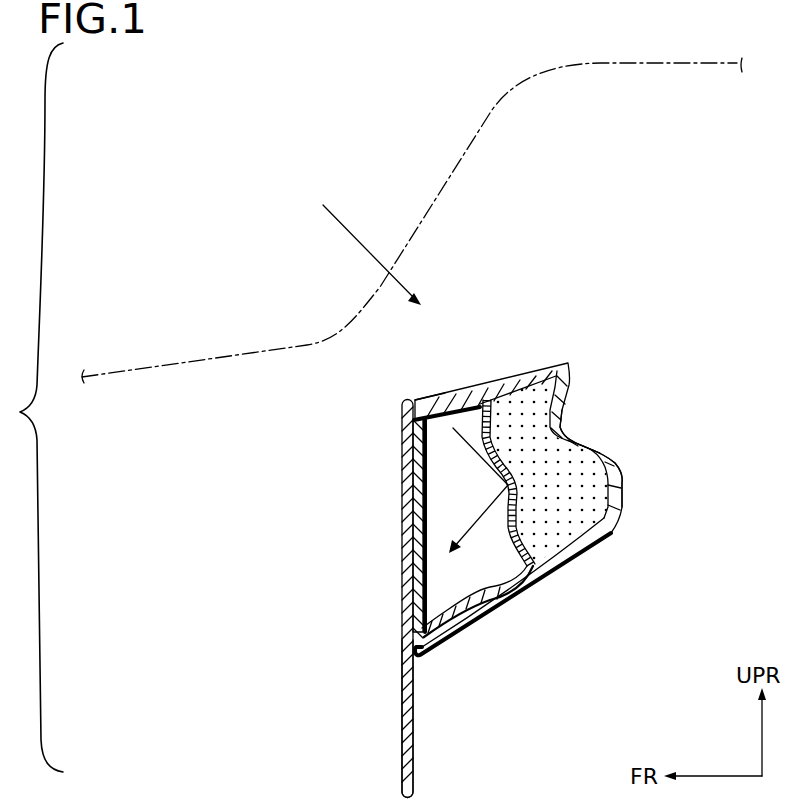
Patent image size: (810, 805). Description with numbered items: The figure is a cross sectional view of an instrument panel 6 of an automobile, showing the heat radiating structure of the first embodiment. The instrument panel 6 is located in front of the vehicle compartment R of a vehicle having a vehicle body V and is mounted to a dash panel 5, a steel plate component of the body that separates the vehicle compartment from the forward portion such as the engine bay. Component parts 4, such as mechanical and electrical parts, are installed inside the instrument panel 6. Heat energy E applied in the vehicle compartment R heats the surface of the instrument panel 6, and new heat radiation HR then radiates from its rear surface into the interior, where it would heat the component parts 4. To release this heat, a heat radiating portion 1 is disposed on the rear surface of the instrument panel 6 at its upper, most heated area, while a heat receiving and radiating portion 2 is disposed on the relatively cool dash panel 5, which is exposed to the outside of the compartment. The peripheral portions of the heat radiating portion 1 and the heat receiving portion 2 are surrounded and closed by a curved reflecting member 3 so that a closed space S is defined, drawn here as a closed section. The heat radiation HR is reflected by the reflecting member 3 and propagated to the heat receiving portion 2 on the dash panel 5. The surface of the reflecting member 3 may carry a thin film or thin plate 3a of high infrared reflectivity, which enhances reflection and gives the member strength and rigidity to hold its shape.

The heat radiating portion 1 is at (473, 402).
The heat receiving and radiating portion 2 is at (405, 587).
The reflecting member 3 is at (497, 412).
The thin film or thin plate 3a is at (470, 602).
The component parts 4 is at (594, 512).
The dash panel 5 is at (412, 705).
The instrument panel 6 is at (445, 397).
The closed space S is at (442, 465).
The heat radiation HR is at (477, 523).
The vehicle body V is at (400, 168).
The heat energy E is at (347, 232).
The vehicle compartment R is at (634, 80).